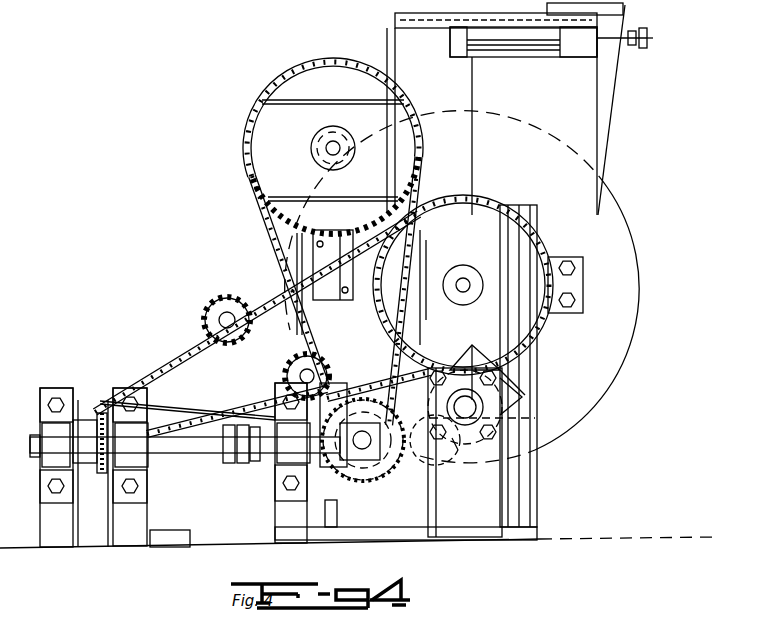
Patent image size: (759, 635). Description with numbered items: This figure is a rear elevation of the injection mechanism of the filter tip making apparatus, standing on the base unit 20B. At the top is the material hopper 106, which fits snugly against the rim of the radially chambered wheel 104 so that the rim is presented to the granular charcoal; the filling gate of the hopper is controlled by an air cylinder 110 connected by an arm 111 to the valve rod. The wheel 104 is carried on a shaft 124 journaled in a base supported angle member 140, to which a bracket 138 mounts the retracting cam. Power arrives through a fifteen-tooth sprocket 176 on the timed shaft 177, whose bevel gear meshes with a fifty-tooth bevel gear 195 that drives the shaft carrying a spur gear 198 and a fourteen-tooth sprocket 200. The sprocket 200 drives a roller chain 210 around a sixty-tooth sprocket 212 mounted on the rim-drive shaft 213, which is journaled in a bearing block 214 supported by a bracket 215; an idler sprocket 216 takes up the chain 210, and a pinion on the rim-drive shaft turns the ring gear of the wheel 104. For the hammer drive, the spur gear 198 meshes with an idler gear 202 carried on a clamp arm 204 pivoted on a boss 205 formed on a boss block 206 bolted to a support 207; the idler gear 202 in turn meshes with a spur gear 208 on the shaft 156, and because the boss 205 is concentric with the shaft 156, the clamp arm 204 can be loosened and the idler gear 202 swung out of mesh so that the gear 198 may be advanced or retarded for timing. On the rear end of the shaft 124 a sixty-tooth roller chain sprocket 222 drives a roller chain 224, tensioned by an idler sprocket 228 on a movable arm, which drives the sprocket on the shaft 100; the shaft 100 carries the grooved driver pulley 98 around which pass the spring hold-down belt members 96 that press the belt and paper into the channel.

The base unit 20B is at (586, 538).
The hold-down belt members 96 is at (175, 402).
The grooved driver pulley 98 is at (94, 418).
The shaft 100 is at (44, 426).
The radially chambered wheel 104 is at (612, 232).
The material hopper 106 is at (612, 112).
The air cylinder 110 is at (515, 46).
The arm 111 is at (638, 28).
The shaft 124 is at (468, 291).
The bracket 138 is at (584, 272).
The angle member 140 is at (533, 478).
The shaft 156 is at (462, 355).
The sprocket 176 is at (82, 422).
The shaft 177 is at (190, 453).
The bevel gear 195 is at (372, 468).
The spur gear 198 is at (362, 479).
The sprocket 200 is at (366, 392).
The idler gear 202 is at (423, 471).
The clamp arm 204 is at (505, 400).
The boss 205 is at (520, 417).
The boss block 206 is at (462, 446).
The support 207 is at (504, 515).
The spur gear 208 is at (512, 388).
The roller chain 210 is at (414, 180).
The sprocket 212 is at (300, 159).
The rim-drive shaft 213 is at (340, 148).
The bearing block 214 is at (340, 139).
The bracket 215 is at (340, 296).
The idler sprocket 216 is at (284, 378).
The roller chain sprocket 222 is at (480, 251).
The roller chain 224 is at (216, 350).
The idler sprocket 228 is at (239, 303).